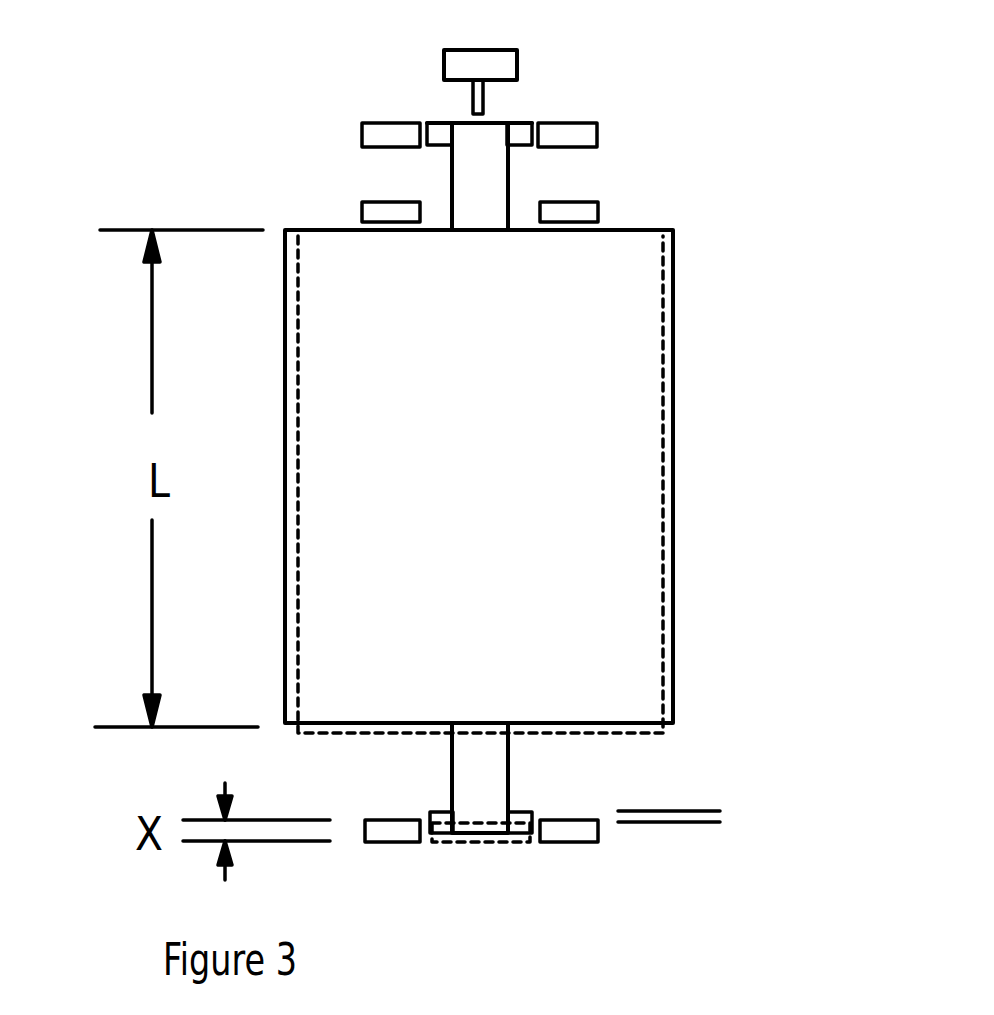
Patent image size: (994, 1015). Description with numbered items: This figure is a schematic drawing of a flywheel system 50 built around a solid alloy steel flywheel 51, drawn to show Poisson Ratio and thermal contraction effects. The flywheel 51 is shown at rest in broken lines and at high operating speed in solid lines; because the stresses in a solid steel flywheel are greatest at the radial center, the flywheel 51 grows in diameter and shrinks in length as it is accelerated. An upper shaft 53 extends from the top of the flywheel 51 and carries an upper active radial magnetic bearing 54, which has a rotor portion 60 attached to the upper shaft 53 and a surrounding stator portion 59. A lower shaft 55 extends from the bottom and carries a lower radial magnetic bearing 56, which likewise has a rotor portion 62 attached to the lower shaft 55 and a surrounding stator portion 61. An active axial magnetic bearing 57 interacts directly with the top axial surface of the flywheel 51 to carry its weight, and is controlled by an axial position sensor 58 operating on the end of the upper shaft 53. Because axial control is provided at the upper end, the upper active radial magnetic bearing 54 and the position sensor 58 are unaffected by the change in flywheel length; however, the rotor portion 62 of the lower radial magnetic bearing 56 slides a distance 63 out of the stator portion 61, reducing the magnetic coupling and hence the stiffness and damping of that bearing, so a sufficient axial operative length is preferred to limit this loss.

The flywheel system 50 is at (267, 90).
The flywheel 51 is at (673, 380).
The upper shaft 53 is at (508, 173).
The upper active radial magnetic bearing 54 is at (537, 107).
The lower shaft 55 is at (508, 772).
The lower radial magnetic bearing 56 is at (533, 850).
The active axial magnetic bearing 57 is at (598, 212).
The axial position sensor 58 is at (468, 88).
The stator portion 59 is at (360, 130).
The rotor portion 60 is at (447, 148).
The stator portion 61 is at (380, 820).
The rotor portion 62 is at (443, 834).
The distance 63 is at (732, 818).